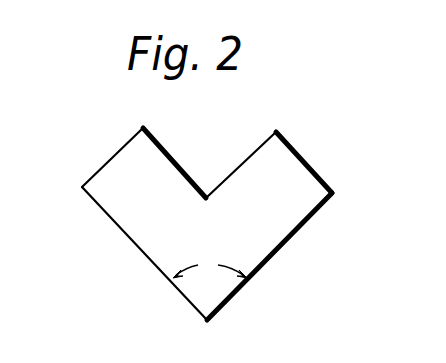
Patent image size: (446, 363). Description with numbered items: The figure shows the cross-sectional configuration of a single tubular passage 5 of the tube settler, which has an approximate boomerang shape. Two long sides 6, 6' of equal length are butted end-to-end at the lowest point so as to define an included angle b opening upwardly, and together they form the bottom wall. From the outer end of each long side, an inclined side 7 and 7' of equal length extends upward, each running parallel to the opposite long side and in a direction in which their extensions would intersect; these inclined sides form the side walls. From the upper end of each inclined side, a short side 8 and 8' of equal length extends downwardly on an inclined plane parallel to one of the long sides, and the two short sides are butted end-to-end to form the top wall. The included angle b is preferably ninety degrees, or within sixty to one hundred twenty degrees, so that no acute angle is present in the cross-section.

The tubular passage 5 is at (115, 212).
The long side 6 is at (127, 271).
The long side 6' is at (269, 256).
The inclined side 7 is at (112, 156).
The inclined side 7' is at (306, 162).
The short side 8 is at (174, 155).
The short side 8' is at (241, 156).
The included angle b is at (210, 265).